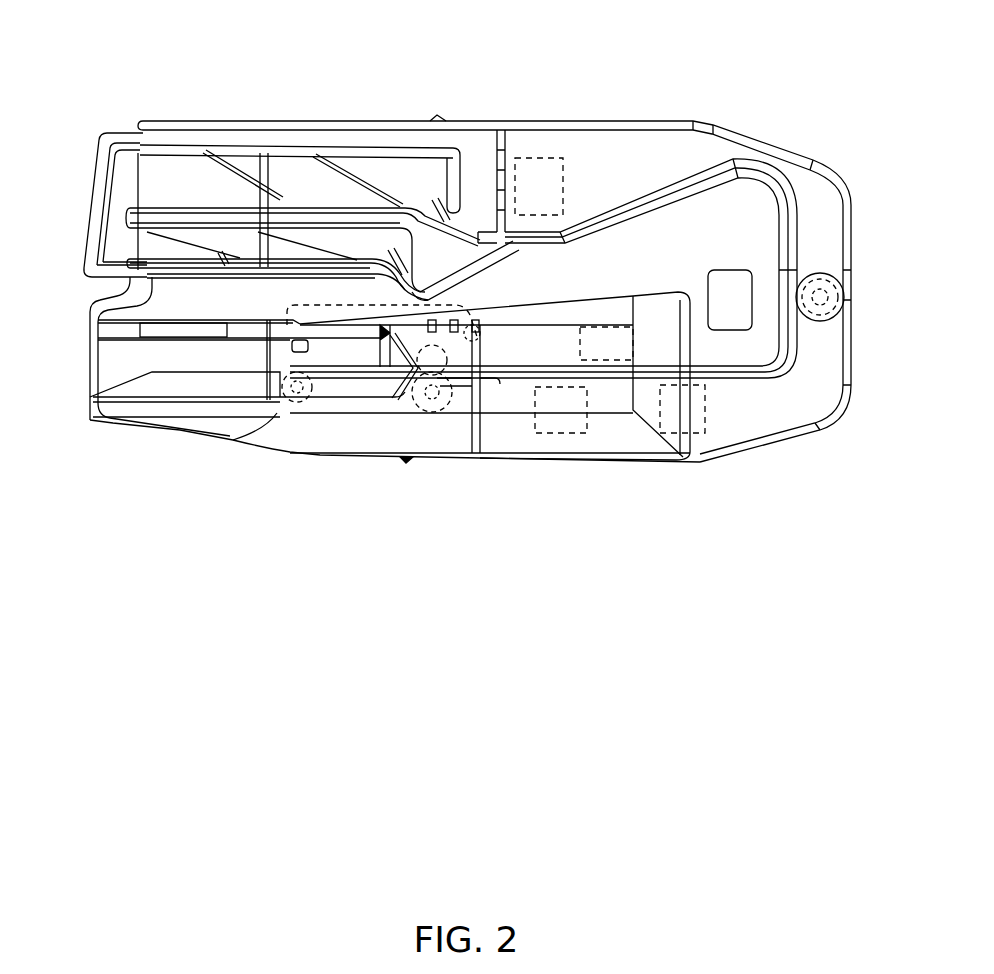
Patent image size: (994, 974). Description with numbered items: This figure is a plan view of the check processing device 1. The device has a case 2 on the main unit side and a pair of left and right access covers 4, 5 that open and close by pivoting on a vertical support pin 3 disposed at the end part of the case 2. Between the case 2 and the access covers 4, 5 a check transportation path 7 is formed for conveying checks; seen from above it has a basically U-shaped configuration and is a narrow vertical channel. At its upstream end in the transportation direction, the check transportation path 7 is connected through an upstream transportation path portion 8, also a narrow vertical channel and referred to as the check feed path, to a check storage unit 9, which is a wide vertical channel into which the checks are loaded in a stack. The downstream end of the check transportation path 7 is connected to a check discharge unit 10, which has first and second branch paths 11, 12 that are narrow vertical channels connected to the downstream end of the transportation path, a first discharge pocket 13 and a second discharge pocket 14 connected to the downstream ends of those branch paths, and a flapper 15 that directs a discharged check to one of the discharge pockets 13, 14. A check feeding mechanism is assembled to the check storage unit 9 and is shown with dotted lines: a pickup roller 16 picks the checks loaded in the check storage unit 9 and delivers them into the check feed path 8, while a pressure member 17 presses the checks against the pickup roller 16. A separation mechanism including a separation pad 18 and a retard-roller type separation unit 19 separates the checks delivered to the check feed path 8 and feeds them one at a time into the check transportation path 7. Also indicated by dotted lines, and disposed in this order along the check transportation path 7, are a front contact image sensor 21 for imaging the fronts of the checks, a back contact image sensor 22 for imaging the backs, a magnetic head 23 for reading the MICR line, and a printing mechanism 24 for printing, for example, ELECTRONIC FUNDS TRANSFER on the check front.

The check processing device 1 is at (798, 130).
The case 2 is at (308, 452).
The vertical support pin 3 is at (822, 313).
The access cover 4 is at (623, 428).
The access cover 5 is at (598, 174).
The check transportation path 7 is at (730, 376).
The upstream transportation path portion 8 is at (447, 377).
The check storage unit 9 is at (198, 357).
The check discharge unit 10 is at (263, 145).
The first branch path 11 is at (492, 233).
The second branch path 12 is at (446, 273).
The first discharge pocket 13 is at (300, 182).
The second discharge pocket 14 is at (182, 255).
The flapper 15 is at (507, 236).
The pickup roller 16 is at (294, 403).
The pressure member 17 is at (352, 327).
The separation pad 18 is at (403, 372).
The retard-roller type separation unit 19 is at (443, 394).
The front contact image sensor 21 is at (548, 433).
The back contact image sensor 22 is at (603, 360).
The magnetic head 23 is at (698, 420).
The printing mechanism 24 is at (548, 158).